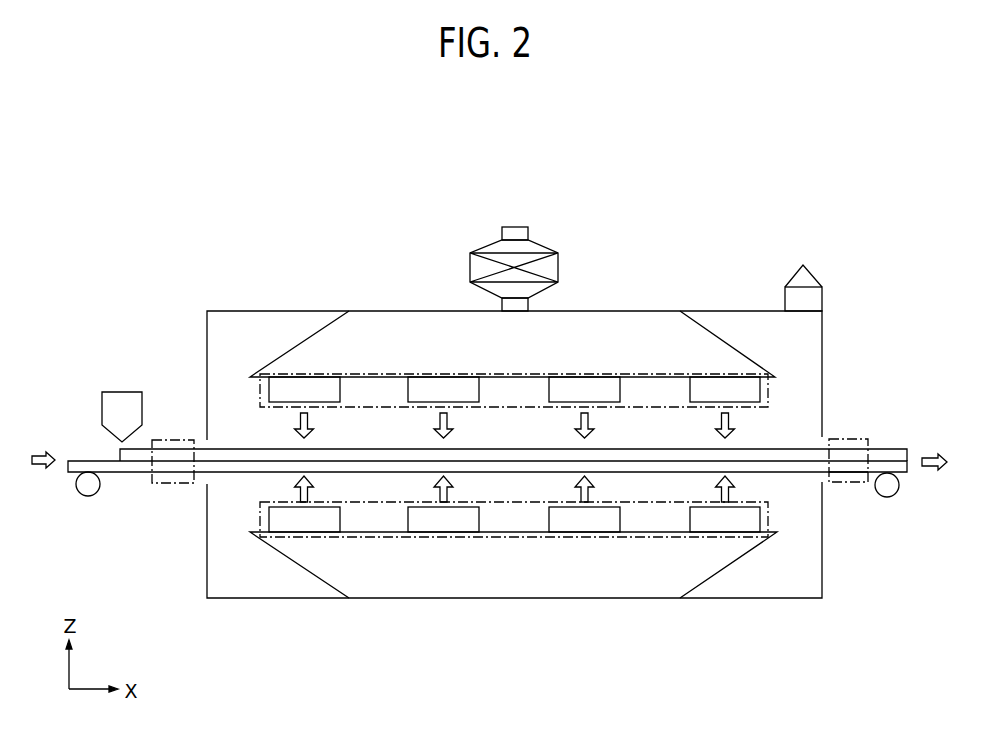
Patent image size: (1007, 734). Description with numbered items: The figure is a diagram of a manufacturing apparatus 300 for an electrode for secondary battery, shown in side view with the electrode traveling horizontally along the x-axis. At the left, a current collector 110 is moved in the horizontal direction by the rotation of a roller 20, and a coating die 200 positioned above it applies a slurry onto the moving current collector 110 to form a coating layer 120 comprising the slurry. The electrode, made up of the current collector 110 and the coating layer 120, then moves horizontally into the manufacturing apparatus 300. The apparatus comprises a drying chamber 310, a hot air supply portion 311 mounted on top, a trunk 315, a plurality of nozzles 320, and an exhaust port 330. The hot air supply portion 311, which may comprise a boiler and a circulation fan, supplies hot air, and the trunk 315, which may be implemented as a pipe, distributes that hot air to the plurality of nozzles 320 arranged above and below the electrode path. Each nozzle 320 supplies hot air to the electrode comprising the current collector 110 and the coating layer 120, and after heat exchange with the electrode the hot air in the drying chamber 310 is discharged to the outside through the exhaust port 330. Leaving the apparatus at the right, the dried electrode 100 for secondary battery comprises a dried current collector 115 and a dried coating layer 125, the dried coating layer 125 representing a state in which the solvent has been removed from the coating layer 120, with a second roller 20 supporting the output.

The roller 20 is at (88, 496).
The electrode for secondary battery 100 is at (487, 455).
The current collector 110 is at (167, 484).
The dried current collector 115 is at (840, 483).
The coating layer 120 is at (167, 440).
The dried coating layer 125 is at (841, 440).
The coating die 200 is at (114, 384).
The manufacturing apparatus 300 is at (542, 433).
The drying chamber 310 is at (232, 322).
The hot air supply portion 311 is at (558, 265).
The trunk 315 is at (702, 325).
The nozzles 320 is at (773, 382).
The exhaust port 330 is at (823, 292).